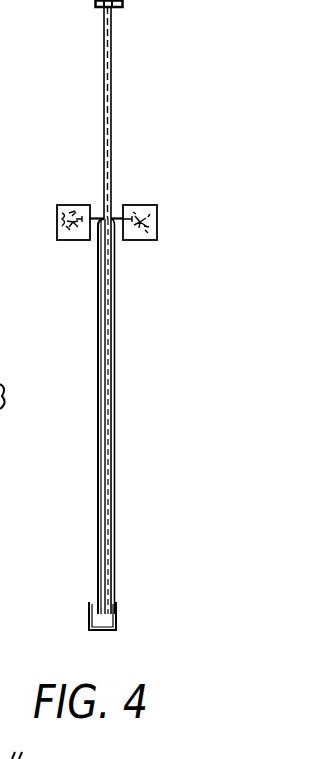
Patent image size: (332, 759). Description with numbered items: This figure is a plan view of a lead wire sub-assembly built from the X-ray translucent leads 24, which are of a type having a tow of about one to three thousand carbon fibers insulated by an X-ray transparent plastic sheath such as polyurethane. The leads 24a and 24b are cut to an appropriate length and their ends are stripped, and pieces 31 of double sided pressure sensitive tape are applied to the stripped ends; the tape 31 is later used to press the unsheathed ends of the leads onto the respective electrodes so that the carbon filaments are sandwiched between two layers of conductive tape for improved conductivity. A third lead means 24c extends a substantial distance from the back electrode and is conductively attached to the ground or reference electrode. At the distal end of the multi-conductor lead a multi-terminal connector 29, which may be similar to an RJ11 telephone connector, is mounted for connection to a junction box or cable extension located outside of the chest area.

The third lead means 24c is at (112, 97).
The pieces of pressure sensitive tape 31 is at (128, 206).
The lead 24a is at (84, 241).
The lead 24b is at (125, 241).
The X-ray translucent leads 24 is at (113, 432).
The multi-terminal connector 29 is at (117, 617).